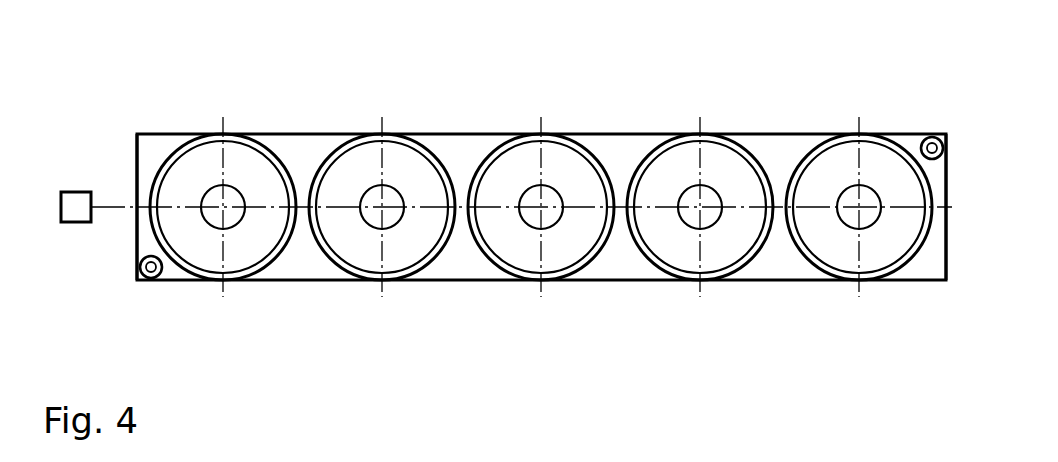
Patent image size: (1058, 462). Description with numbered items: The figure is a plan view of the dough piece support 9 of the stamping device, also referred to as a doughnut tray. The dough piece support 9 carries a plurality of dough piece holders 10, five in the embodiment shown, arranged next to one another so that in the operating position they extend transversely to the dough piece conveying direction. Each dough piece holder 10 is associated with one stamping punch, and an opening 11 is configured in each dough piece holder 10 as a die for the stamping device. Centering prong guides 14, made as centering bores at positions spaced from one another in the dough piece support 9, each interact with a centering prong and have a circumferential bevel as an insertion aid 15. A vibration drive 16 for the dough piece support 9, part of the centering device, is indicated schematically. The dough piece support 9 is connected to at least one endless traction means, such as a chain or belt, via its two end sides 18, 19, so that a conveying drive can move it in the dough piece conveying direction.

The dough piece support 9 is at (459, 124).
The dough piece holder 10 is at (227, 253).
The opening 11 is at (229, 188).
The centering prong guide 14 is at (153, 278).
The insertion aid 15 is at (137, 281).
The vibration drive 16 is at (71, 196).
The end side 18 is at (135, 137).
The end side 19 is at (947, 262).